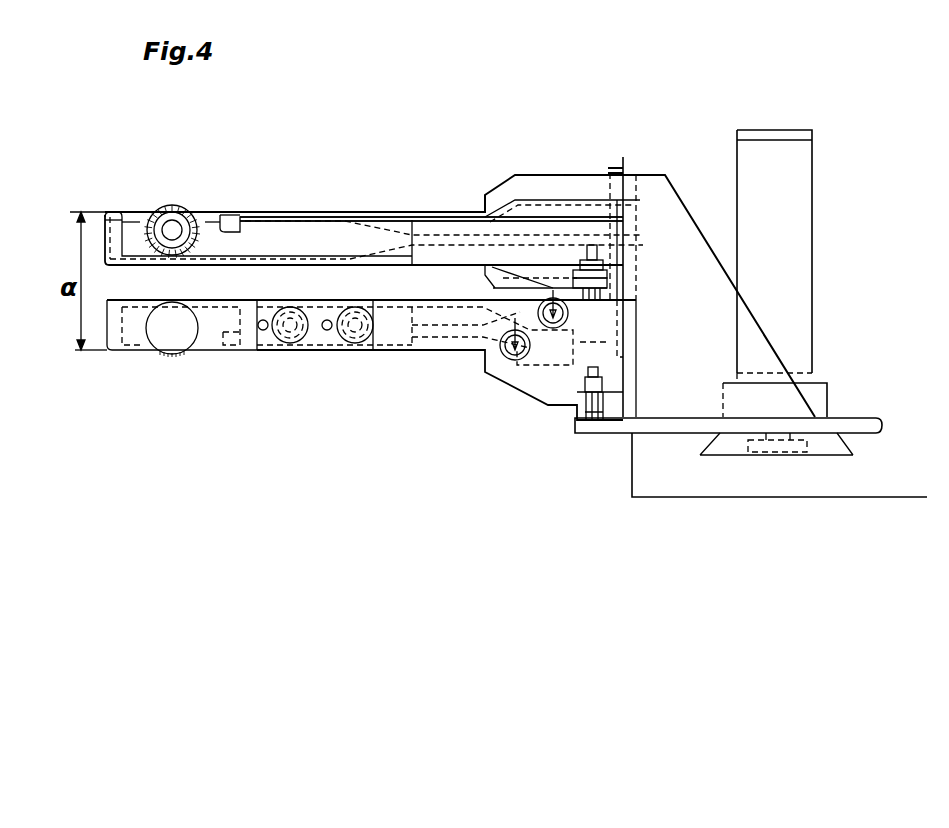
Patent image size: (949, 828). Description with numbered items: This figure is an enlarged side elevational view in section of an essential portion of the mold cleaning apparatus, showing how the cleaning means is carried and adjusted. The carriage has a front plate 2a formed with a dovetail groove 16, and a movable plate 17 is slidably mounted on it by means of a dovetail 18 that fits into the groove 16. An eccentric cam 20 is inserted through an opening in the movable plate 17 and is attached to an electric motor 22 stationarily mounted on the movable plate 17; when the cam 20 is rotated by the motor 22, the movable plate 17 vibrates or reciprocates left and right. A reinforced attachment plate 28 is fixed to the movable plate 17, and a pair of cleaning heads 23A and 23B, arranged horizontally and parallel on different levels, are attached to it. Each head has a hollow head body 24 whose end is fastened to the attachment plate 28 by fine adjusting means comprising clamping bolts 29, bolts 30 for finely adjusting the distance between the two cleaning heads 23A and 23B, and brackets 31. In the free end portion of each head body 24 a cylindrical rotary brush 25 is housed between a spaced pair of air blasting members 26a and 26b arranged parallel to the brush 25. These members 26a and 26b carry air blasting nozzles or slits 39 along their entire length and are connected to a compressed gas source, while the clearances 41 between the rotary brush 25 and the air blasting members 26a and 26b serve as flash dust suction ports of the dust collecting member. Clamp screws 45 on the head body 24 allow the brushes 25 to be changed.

The front plate 2a is at (872, 480).
The dovetail groove 16 is at (713, 452).
The movable plate 17 is at (878, 420).
The dovetail 18 is at (740, 455).
The eccentric cam 20 is at (785, 455).
The electric motor 22 is at (797, 182).
The cleaning head 23A is at (451, 200).
The cleaning head 23B is at (424, 347).
The head body 24 is at (352, 340).
The cylindrical rotary brush 25 is at (174, 205).
The air blasting member 26a is at (107, 220).
The air blasting member 26b is at (242, 217).
The reinforced attachment plate 28 is at (613, 172).
The clamping bolts 29 is at (647, 217).
The bolts 30 is at (583, 252).
The brackets 31 is at (603, 283).
The air blasting nozzles or slits 39 is at (113, 217).
The clearances 41 is at (138, 222).
The clamp screws 45 is at (343, 333).